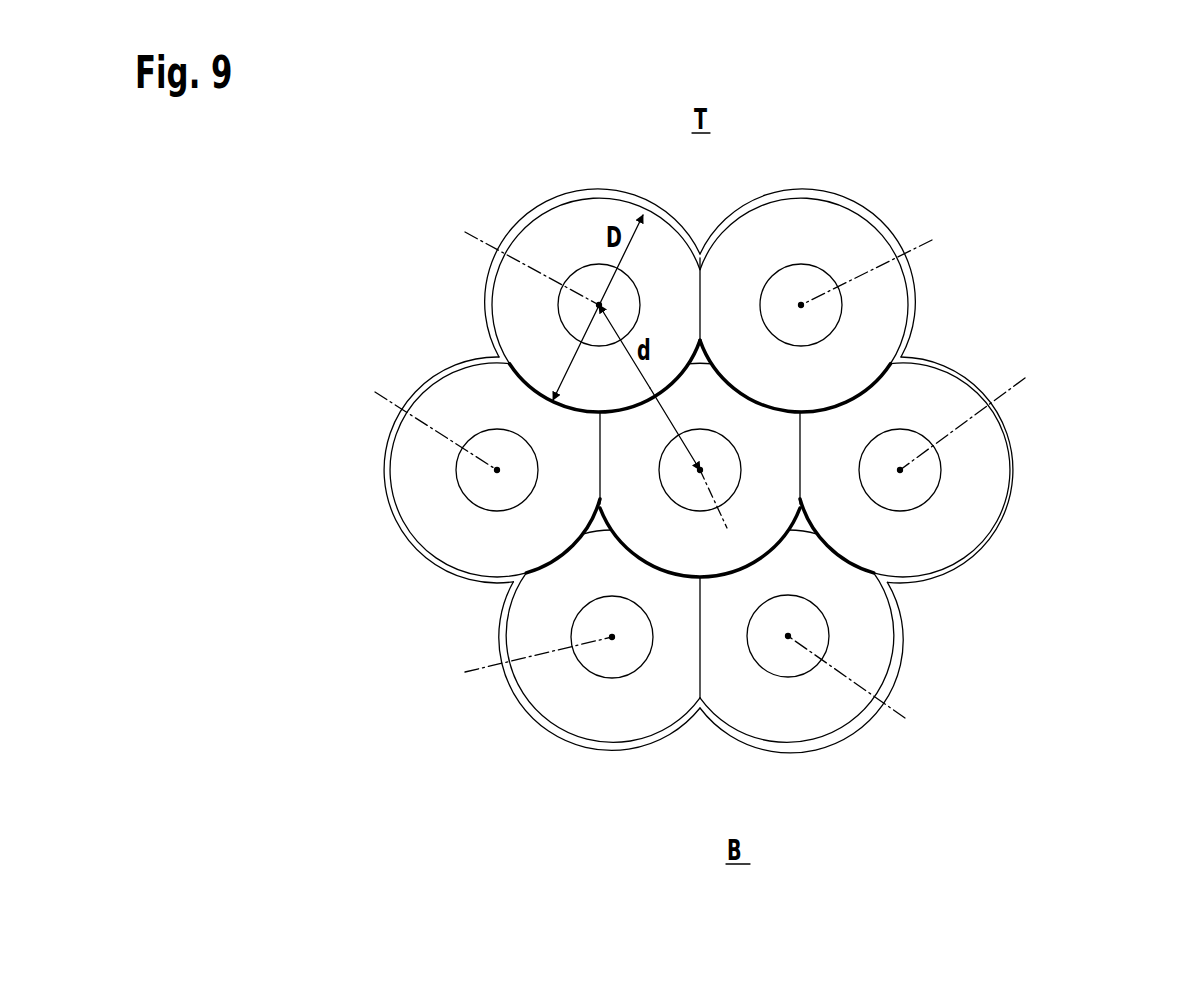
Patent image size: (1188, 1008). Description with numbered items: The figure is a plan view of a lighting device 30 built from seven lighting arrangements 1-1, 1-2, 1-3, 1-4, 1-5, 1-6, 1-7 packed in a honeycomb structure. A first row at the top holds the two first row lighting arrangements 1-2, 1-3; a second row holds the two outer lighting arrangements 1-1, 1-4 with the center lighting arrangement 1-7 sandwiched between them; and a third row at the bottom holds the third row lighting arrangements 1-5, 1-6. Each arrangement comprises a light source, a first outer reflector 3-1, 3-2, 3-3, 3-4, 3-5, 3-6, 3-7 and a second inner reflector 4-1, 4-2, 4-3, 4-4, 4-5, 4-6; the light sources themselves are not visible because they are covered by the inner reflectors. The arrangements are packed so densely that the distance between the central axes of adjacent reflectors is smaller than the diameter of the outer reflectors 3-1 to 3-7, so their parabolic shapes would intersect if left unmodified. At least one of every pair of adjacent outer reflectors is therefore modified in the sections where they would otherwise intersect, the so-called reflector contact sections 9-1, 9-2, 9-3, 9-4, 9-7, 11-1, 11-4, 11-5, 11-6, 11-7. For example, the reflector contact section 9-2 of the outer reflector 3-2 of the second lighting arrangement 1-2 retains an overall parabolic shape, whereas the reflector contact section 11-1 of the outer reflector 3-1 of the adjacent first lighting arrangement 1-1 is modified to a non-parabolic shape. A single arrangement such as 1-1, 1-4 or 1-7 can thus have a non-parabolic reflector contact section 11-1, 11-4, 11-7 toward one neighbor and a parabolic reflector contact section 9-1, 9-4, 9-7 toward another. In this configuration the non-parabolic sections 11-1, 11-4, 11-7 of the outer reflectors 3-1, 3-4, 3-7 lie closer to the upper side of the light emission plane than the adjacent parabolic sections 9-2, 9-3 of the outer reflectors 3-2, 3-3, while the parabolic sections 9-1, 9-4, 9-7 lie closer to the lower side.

The lighting device 30 is at (1083, 192).
The first lighting arrangement 1-1 is at (388, 538).
The second lighting arrangement 1-2 is at (556, 192).
The third lighting arrangement 1-3 is at (860, 190).
The fourth lighting arrangement 1-4 is at (1018, 495).
The fifth lighting arrangement 1-5 is at (880, 735).
The sixth lighting arrangement 1-6 is at (514, 740).
The center lighting arrangement 1-7 is at (708, 386).
The outer reflector 3-1 is at (463, 392).
The outer reflector 3-2 is at (584, 226).
The outer reflector 3-3 is at (883, 287).
The outer reflector 3-4 is at (985, 447).
The outer reflector 3-5 is at (830, 700).
The outer reflector 3-6 is at (593, 717).
The outer reflector 3-7 is at (768, 535).
The inner reflector 4-1 is at (475, 466).
The inner reflector 4-2 is at (582, 282).
The inner reflector 4-3 is at (822, 287).
The inner reflector 4-4 is at (920, 473).
The inner reflector 4-5 is at (793, 660).
The inner reflector 4-6 is at (588, 655).
The parabolic reflector contact section 9-1 is at (543, 557).
The parabolic reflector contact section 9-2 is at (663, 372).
The parabolic reflector contact section 9-3 is at (739, 372).
The parabolic reflector contact section 9-4 is at (851, 548).
The parabolic reflector contact section 9-7 is at (752, 545).
The non-parabolic reflector contact section 11-1 is at (510, 388).
The non-parabolic reflector contact section 11-4 is at (893, 390).
The reflector contact section 11-5 is at (849, 583).
The reflector contact section 11-6 is at (552, 585).
The non-parabolic reflector contact section 11-7 is at (637, 425).